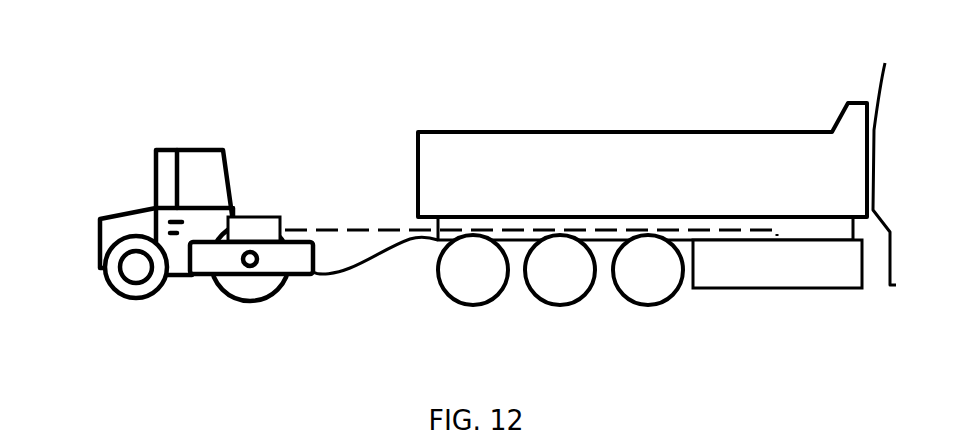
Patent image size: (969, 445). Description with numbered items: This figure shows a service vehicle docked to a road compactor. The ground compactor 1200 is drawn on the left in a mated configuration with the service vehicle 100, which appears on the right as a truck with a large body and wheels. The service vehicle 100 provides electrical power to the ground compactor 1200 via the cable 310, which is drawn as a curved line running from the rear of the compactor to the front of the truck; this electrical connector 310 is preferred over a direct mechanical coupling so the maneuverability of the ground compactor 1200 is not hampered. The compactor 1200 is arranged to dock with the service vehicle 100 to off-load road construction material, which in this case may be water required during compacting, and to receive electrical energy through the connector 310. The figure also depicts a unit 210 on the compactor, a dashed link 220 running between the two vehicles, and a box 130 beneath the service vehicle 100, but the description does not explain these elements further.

The ground compactor 1200 is at (116, 126).
The service vehicle 100 is at (653, 131).
The controller 130 is at (777, 264).
The compactor communication device 210 is at (254, 229).
The communication link 220 is at (320, 228).
The cable 310 is at (380, 255).